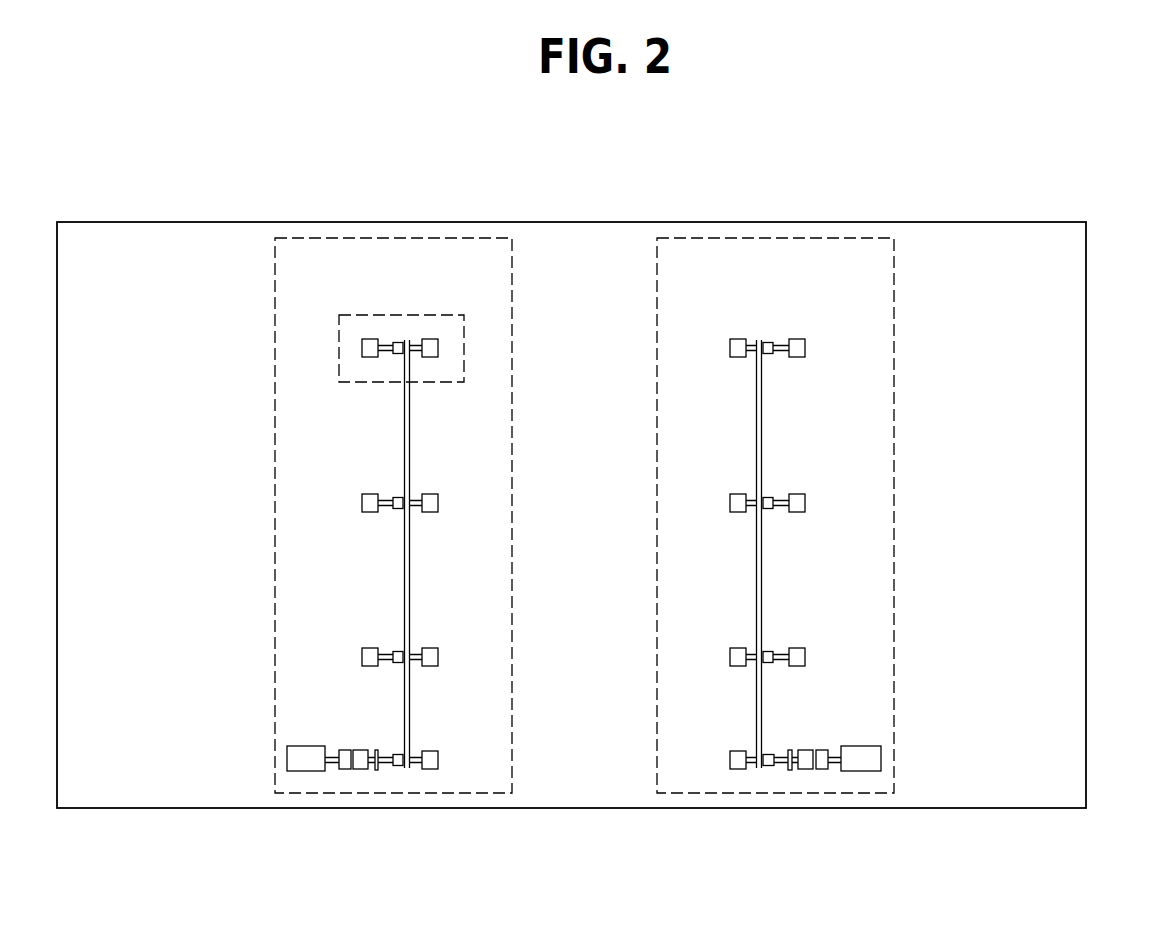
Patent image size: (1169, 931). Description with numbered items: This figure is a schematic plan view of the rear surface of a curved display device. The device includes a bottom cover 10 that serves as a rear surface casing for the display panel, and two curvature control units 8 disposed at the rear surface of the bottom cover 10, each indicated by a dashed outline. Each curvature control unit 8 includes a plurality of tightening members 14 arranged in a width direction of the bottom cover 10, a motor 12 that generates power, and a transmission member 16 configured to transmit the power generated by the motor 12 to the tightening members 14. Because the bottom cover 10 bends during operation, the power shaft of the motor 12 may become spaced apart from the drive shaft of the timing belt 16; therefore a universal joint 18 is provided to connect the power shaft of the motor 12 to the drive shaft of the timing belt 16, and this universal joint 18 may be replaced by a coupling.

The curvature control unit 8 is at (346, 238).
The bottom cover 10 is at (1065, 315).
The motor 12 is at (308, 771).
The tightening member 14 is at (436, 315).
The transmission member 16 is at (410, 408).
The universal joint 18 is at (362, 770).